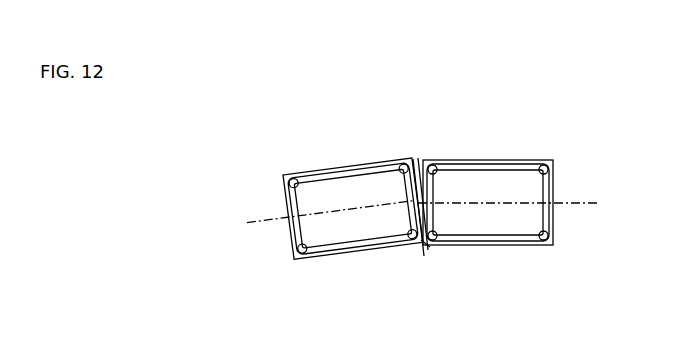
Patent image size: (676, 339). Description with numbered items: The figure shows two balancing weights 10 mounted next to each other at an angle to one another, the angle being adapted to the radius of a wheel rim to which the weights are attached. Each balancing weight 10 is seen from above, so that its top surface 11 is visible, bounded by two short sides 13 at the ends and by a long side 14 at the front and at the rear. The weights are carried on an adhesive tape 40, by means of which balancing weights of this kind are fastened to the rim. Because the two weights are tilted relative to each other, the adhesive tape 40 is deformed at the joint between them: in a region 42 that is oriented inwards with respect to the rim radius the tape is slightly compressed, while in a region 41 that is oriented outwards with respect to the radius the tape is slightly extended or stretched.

The balancing weight 10 is at (340, 220).
The top surface 11 is at (386, 223).
The short side 13 is at (408, 162).
The long side 14 is at (347, 171).
The adhesive tape 40 is at (287, 174).
The stretched region 41 is at (419, 160).
The compressed region 42 is at (425, 245).